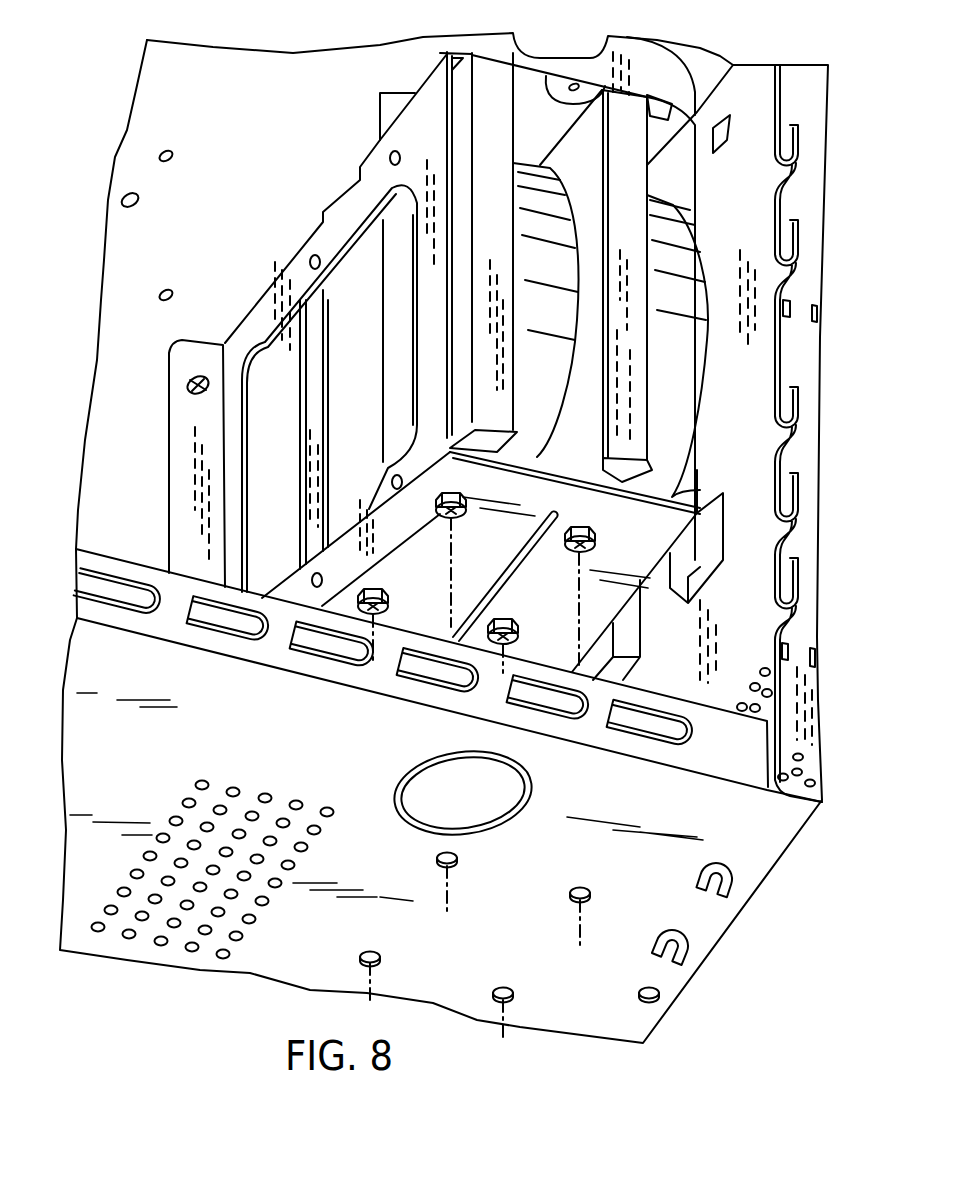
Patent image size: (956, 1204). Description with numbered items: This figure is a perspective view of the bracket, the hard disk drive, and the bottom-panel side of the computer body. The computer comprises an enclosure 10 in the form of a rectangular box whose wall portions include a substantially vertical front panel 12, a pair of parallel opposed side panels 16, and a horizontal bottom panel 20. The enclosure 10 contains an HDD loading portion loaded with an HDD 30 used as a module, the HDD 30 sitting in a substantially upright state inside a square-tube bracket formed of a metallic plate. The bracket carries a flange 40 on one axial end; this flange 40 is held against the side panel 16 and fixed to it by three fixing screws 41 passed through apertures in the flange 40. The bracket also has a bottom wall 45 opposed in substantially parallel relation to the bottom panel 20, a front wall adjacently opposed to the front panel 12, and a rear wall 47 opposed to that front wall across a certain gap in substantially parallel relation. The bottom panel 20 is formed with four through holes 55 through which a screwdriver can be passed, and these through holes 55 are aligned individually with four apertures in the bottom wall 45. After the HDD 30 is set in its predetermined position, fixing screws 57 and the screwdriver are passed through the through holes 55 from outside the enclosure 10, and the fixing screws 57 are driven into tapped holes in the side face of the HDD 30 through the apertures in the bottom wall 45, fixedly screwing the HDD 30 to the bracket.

The enclosure 10 is at (727, 955).
The front panel 12 is at (753, 617).
The side panel 16 is at (237, 67).
The bottom panel 20 is at (253, 952).
The HDD 30 is at (483, 152).
The flange 40 is at (182, 486).
The fixing screw 41 is at (187, 385).
The bottom wall 45 is at (667, 517).
The rear wall 47 is at (257, 333).
The through hole 55 is at (458, 860).
The fixing screw 57 is at (390, 593).